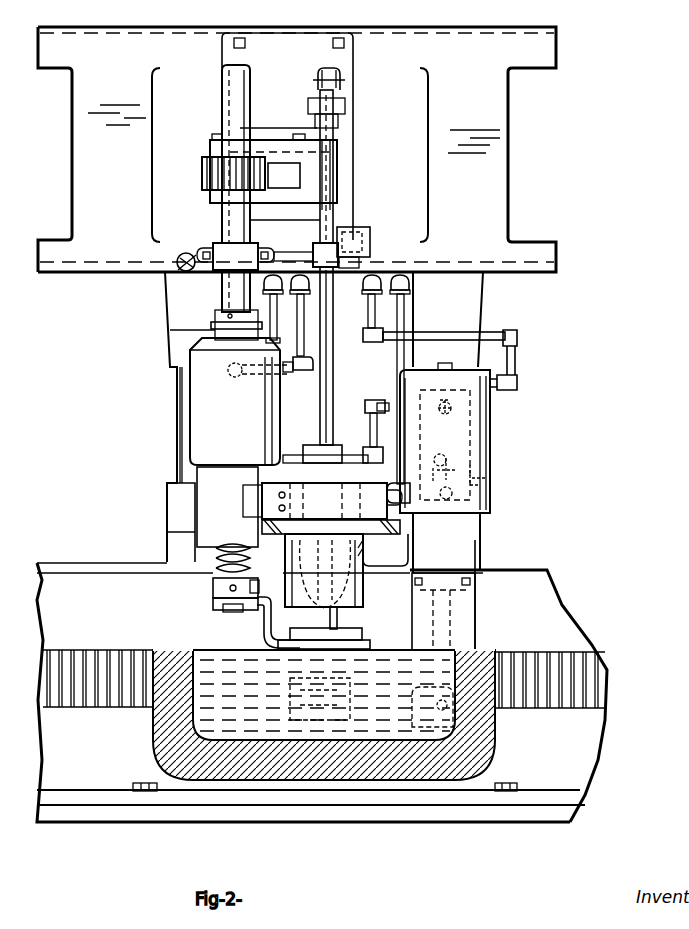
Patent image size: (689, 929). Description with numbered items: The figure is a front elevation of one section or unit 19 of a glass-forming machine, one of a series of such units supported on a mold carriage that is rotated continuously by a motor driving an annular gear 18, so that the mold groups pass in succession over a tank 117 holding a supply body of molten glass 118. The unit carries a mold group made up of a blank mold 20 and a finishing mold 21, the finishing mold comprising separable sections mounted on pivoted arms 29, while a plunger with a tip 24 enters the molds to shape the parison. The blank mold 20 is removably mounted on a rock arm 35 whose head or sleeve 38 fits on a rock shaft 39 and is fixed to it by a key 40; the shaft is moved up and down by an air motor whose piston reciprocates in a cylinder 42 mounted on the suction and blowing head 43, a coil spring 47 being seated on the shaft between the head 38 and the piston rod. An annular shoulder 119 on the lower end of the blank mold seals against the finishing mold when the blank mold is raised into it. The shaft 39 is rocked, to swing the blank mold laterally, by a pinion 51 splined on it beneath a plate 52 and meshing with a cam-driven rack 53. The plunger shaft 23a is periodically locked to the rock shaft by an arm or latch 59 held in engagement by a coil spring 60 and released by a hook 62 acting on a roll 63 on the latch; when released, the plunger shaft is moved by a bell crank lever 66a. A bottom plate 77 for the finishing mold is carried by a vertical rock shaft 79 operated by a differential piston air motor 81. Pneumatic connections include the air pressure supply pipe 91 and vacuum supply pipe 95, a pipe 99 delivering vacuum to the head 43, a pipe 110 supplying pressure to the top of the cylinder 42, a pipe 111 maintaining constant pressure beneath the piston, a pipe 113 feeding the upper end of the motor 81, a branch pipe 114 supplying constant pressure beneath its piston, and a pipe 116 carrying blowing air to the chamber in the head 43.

The annular gear 18 is at (586, 668).
The head or unit 19 is at (170, 384).
The blank mold 20 is at (341, 616).
The finishing mold 21 is at (345, 596).
The plunger shaft 23a is at (328, 393).
The tip 24 is at (350, 582).
The pivoted arms 29 is at (383, 550).
The rock arm 35 is at (264, 624).
The head or sleeve 38 is at (218, 603).
The rock shaft 39 is at (222, 95).
The key 40 is at (228, 587).
The cylinder 42 is at (196, 432).
The suction and blowing head 43 is at (360, 491).
The coil spring 47 is at (218, 555).
The pinion 51 is at (202, 176).
The plate 52 is at (286, 142).
The rack 53 is at (300, 170).
The arm or latch 59 is at (300, 252).
The coil spring 60 is at (196, 272).
The hook 62 is at (366, 235).
The roll 63 is at (352, 232).
The bell crank lever 66a is at (337, 107).
The bottom plate 77 is at (290, 705).
The vertical rock shaft 79 is at (447, 607).
The air motor 81 is at (472, 433).
The air pressure supply pipe 91 is at (450, 426).
The vacuum supply pipe 95 is at (186, 471).
The pipe 99 is at (272, 306).
The pipe 110 is at (307, 331).
The pipe 111 is at (355, 446).
The pipe 113 is at (518, 366).
The branch pipe 114 is at (478, 474).
The pipe 116 is at (401, 334).
The tank 117 is at (482, 750).
The molten glass 118 is at (208, 655).
The annular shoulder 119 is at (362, 636).